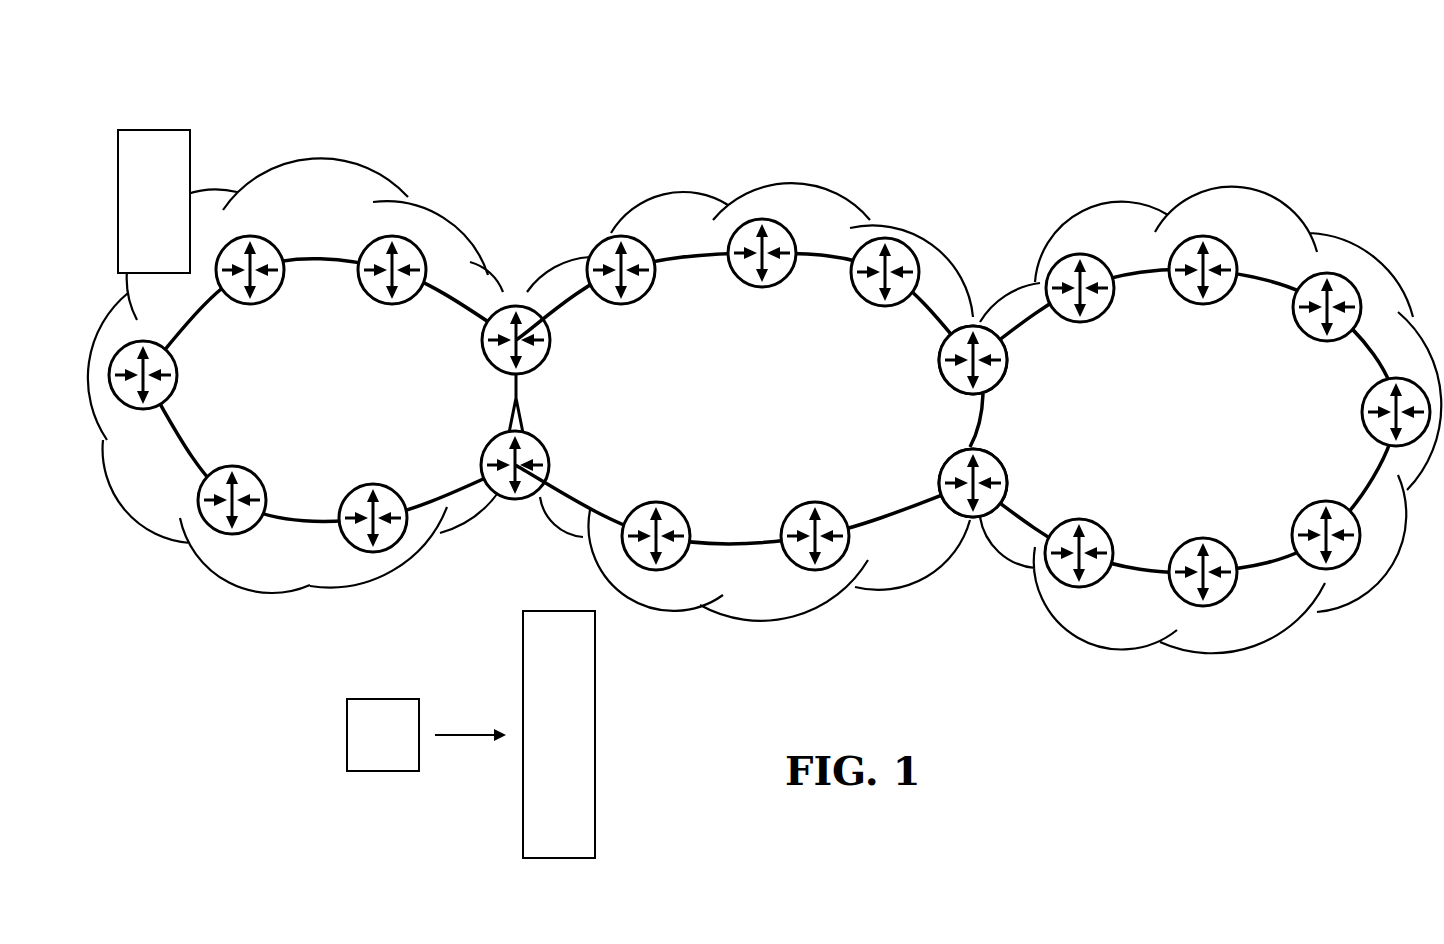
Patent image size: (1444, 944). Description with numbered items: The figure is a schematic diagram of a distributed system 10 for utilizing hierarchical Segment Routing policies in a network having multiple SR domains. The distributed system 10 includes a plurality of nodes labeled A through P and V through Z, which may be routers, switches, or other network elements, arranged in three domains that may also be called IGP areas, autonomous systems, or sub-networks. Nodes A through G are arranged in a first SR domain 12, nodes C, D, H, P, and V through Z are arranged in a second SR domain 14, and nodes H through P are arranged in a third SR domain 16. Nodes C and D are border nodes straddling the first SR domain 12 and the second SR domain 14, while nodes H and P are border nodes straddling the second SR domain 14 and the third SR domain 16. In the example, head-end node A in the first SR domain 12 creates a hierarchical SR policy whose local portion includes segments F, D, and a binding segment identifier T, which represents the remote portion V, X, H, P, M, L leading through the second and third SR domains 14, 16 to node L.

The distributed system 10 is at (525, 109).
The first SR domain 12 is at (319, 361).
The second SR domain 14 is at (687, 520).
The third SR domain 16 is at (1190, 420).